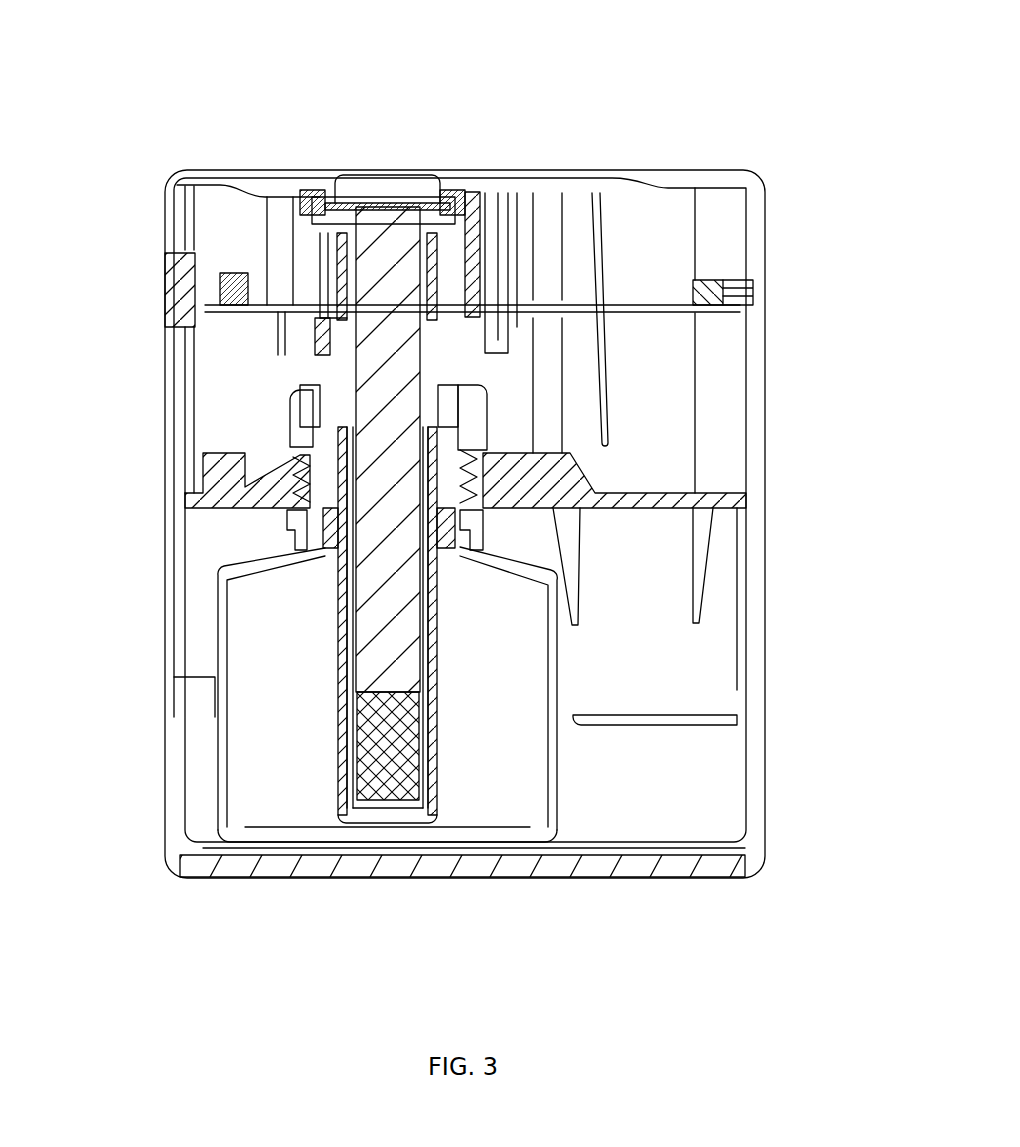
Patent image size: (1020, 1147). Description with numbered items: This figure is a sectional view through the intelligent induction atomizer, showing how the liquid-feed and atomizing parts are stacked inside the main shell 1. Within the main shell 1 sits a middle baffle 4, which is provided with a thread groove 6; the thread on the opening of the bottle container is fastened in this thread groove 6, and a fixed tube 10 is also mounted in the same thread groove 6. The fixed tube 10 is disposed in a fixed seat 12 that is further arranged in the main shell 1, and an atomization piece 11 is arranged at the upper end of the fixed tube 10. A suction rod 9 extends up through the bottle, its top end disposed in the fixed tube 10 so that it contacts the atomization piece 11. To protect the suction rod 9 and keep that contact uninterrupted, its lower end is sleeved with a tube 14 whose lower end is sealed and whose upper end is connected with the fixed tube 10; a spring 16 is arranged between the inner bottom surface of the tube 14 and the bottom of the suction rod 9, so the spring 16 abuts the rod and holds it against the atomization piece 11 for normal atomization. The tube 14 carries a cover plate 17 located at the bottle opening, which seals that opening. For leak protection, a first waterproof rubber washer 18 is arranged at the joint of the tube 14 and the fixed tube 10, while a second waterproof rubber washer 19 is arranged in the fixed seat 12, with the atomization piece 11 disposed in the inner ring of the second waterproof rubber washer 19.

The main shell 1 is at (765, 768).
The middle baffle 4 is at (568, 473).
The thread groove 6 is at (272, 468).
The suction rod 9 is at (400, 662).
The fixed tube 10 is at (385, 317).
The atomization piece 11 is at (388, 207).
The fixed seat 12 is at (478, 200).
The tube 14 is at (340, 598).
The spring 16 is at (378, 745).
The cover plate 17 is at (475, 415).
The first waterproof rubber washer 18 is at (320, 322).
The second waterproof rubber washer 19 is at (312, 205).